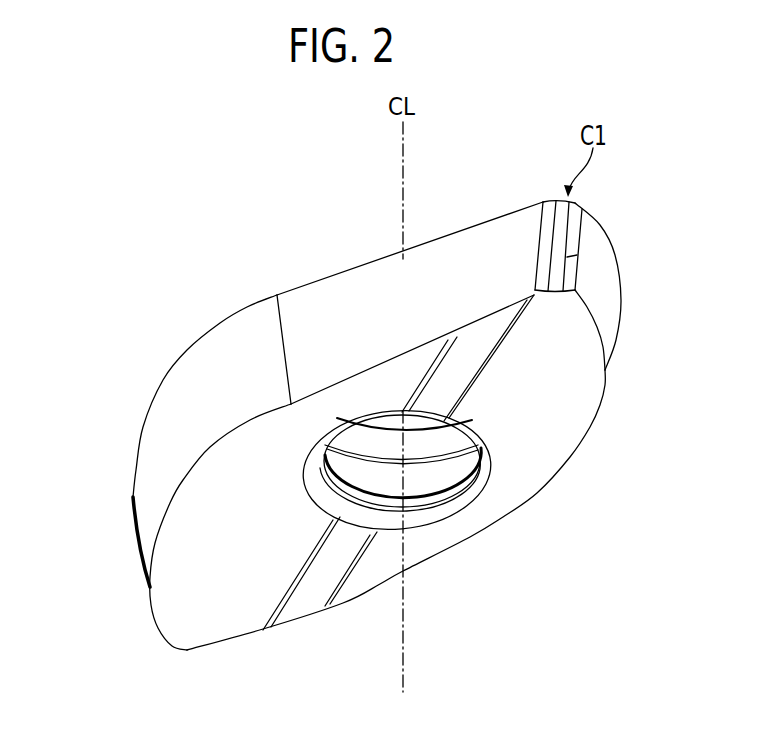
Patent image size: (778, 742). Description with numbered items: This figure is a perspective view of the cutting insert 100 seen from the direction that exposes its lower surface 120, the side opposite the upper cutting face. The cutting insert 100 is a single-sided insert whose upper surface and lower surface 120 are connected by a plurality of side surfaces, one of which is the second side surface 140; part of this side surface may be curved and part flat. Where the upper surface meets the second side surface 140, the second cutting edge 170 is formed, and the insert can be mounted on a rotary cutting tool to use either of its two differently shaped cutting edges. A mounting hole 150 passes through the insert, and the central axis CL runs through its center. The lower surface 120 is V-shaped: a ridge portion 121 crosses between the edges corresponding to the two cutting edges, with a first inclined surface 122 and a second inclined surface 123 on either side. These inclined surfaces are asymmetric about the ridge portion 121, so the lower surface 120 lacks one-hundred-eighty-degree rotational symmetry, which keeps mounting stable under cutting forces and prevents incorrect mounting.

The cutting insert 100 is at (180, 187).
The lower surface 120 is at (197, 625).
The ridge portion 121 is at (308, 598).
The first inclined surface 122 is at (525, 453).
The second inclined surface 123 is at (184, 572).
The second side surface 140 is at (238, 330).
The mounting hole 150 is at (426, 476).
The second cutting edge 170 is at (329, 276).